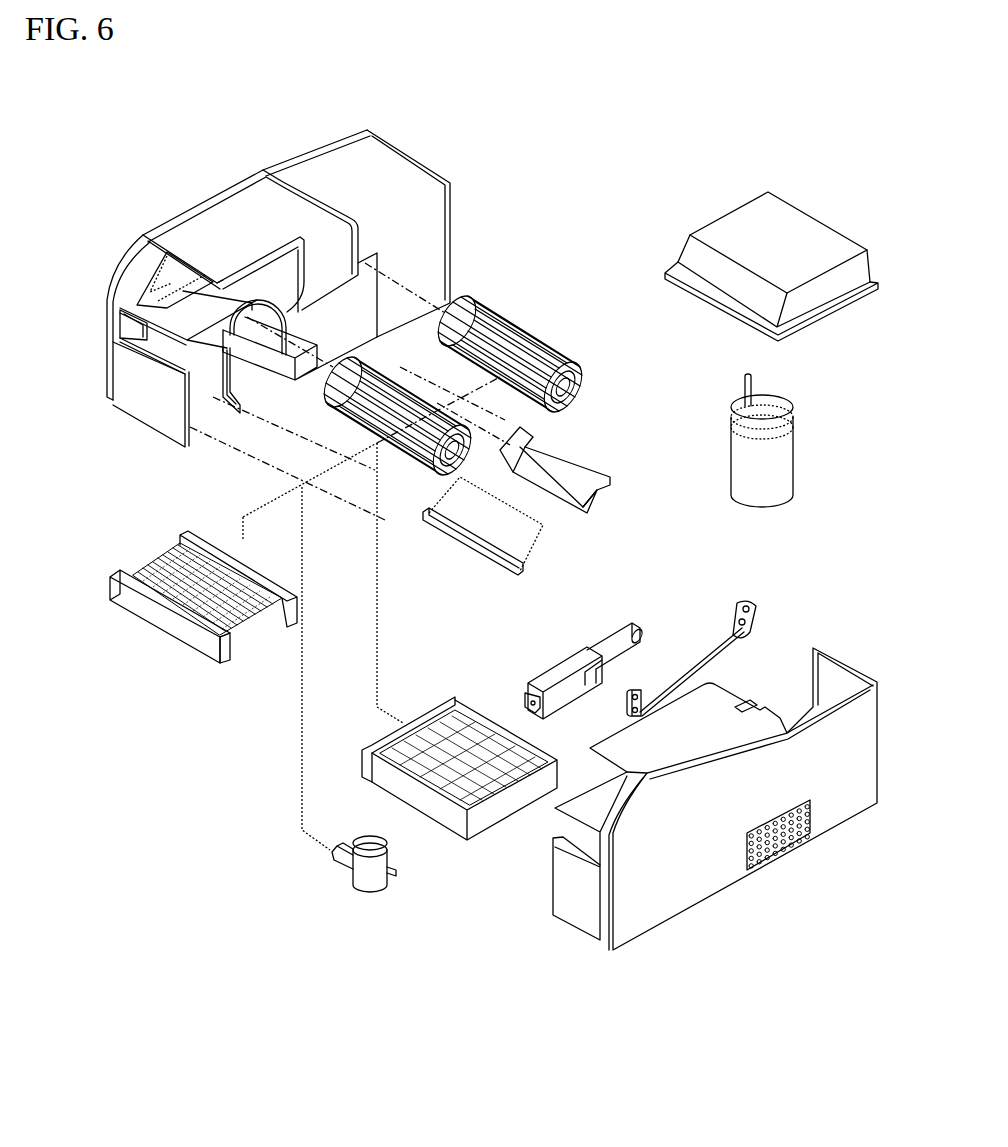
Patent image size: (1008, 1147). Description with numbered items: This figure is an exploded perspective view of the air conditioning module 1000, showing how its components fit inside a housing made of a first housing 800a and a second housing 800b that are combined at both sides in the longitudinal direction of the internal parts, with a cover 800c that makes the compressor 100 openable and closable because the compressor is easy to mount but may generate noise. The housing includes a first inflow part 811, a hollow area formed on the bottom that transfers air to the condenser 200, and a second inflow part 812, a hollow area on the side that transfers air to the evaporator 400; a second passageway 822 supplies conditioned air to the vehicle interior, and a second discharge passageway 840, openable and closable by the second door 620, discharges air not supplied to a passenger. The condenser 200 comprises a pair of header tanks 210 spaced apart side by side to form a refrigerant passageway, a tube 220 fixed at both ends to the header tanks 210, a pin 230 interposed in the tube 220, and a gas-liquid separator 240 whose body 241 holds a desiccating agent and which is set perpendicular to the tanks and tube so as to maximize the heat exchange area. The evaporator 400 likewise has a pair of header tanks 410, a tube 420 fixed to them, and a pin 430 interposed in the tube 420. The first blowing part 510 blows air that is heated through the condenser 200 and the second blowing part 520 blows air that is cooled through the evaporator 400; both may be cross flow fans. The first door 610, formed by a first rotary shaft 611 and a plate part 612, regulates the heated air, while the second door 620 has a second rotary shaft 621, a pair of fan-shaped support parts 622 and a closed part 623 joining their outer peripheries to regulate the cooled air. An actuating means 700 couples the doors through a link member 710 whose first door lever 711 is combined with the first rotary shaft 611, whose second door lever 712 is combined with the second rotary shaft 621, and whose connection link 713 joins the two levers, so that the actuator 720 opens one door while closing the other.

The air conditioning module 1000 is at (245, 130).
The first housing 800a is at (420, 155).
The second housing 800b is at (847, 660).
The cover 800c is at (790, 232).
The second discharge passageway 840 is at (140, 290).
The second passageway 822 is at (213, 297).
The first inflow part 811 is at (203, 393).
The second inflow part 812 is at (790, 852).
The compressor 100 is at (797, 410).
The first blowing part 510 is at (403, 395).
The second blowing part 520 is at (508, 330).
The second door 620 is at (665, 440).
The second rotary shaft 621 is at (613, 480).
The support part 622 is at (585, 473).
The closed part 623 is at (535, 453).
The first door 610 is at (478, 602).
The first rotary shaft 611 is at (447, 533).
The plate part 612 is at (510, 533).
The actuating means 700 is at (650, 534).
The link member 710 is at (720, 546).
The first door lever 711 is at (637, 690).
The second door lever 712 is at (737, 600).
The connection link 713 is at (700, 660).
The actuator 720 is at (606, 655).
The evaporator 400 is at (220, 540).
The header tanks 410 is at (263, 578).
The tube 420 is at (192, 618).
The pin 430 is at (211, 637).
The condenser 200 is at (380, 733).
The header tanks 210 is at (362, 757).
The tube 220 is at (445, 803).
The pin 230 is at (415, 778).
The gas-liquid separator 240 is at (363, 884).
The body 241 is at (333, 855).